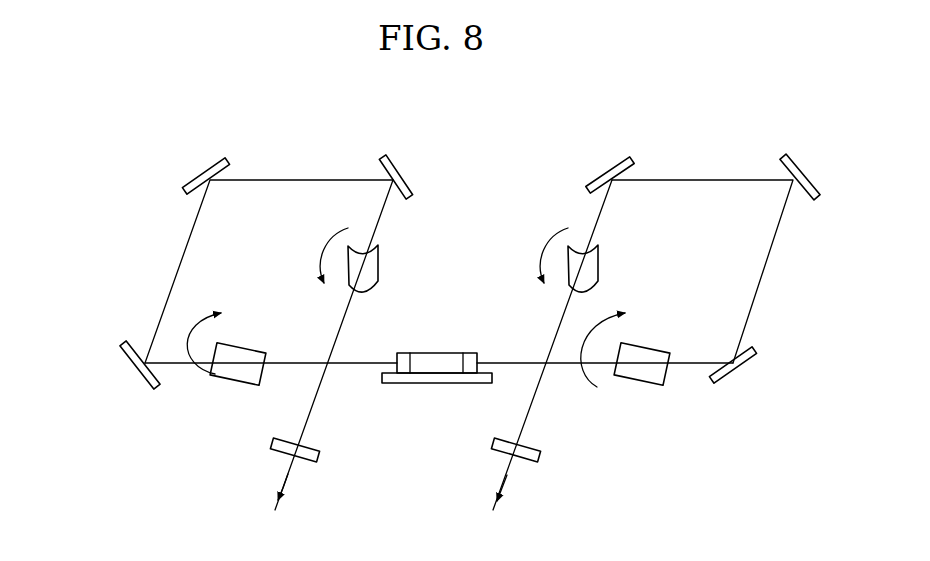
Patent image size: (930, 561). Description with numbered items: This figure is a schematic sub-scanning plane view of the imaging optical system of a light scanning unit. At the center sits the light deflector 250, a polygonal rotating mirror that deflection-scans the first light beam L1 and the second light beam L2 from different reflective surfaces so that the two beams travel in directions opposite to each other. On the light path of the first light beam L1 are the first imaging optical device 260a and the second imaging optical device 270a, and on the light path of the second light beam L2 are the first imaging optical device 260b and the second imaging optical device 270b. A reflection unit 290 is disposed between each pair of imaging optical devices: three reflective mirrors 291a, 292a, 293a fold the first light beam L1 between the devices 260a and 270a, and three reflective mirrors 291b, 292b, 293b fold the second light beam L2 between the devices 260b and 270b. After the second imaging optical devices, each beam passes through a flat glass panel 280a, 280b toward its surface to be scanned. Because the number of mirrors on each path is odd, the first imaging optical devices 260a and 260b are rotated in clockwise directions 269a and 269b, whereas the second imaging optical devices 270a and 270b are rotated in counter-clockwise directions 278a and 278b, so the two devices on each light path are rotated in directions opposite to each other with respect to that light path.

The light deflector 250 is at (418, 385).
The first imaging optical device of the first light beam 260a is at (213, 376).
The first imaging optical device of the second light beam 260b is at (638, 383).
The clockwise direction 269a is at (200, 320).
The clockwise direction 269b is at (597, 387).
The second imaging optical device of the first light beam 270a is at (383, 262).
The second imaging optical device of the second light beam 270b is at (603, 262).
The counter-clockwise direction 278a is at (328, 247).
The counter-clockwise direction 278b is at (548, 247).
The flat glass panel 280a is at (310, 463).
The flat glass panel 280b is at (533, 467).
The reflection unit 290 is at (65, 330).
The reflective mirror 291a is at (130, 367).
The reflective mirror 291b is at (734, 373).
The reflective mirror 292a is at (200, 173).
The reflective mirror 292b is at (805, 172).
The reflective mirror 293a is at (399, 172).
The reflective mirror 293b is at (608, 172).
The first light beam L1 is at (175, 270).
The second light beam L2 is at (763, 273).